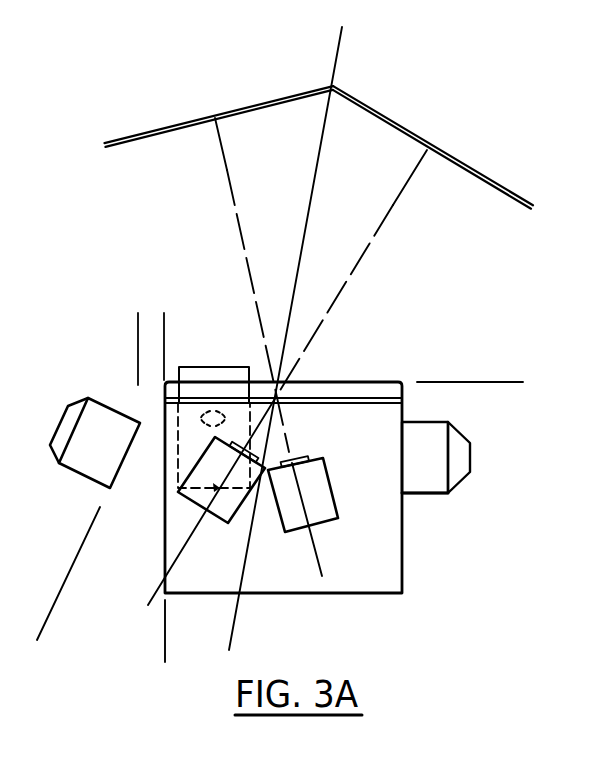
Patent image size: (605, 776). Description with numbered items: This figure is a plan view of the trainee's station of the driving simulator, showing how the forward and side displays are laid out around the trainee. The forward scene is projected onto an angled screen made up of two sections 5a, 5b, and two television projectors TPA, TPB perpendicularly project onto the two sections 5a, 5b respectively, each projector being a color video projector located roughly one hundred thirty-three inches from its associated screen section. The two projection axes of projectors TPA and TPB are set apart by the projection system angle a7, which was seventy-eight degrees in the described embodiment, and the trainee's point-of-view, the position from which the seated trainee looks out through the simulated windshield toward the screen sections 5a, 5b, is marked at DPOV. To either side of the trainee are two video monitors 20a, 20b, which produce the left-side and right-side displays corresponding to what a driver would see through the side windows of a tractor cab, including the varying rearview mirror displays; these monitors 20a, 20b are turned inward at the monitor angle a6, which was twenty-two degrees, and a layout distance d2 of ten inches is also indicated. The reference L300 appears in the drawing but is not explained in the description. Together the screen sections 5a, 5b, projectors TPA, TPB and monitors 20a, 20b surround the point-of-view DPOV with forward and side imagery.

The screen section 5a is at (117, 138).
The screen section 5b is at (507, 185).
The video monitor 20a is at (87, 486).
The video monitor 20b is at (448, 494).
The lens housing L300 is at (163, 410).
The television projector TPA is at (207, 504).
The television projector TPB is at (313, 523).
The trainee's point-of-view DPOV is at (220, 492).
The distance d2 is at (208, 338).
The monitor angle a6 is at (66, 603).
The projection system angle a7 is at (316, 220).